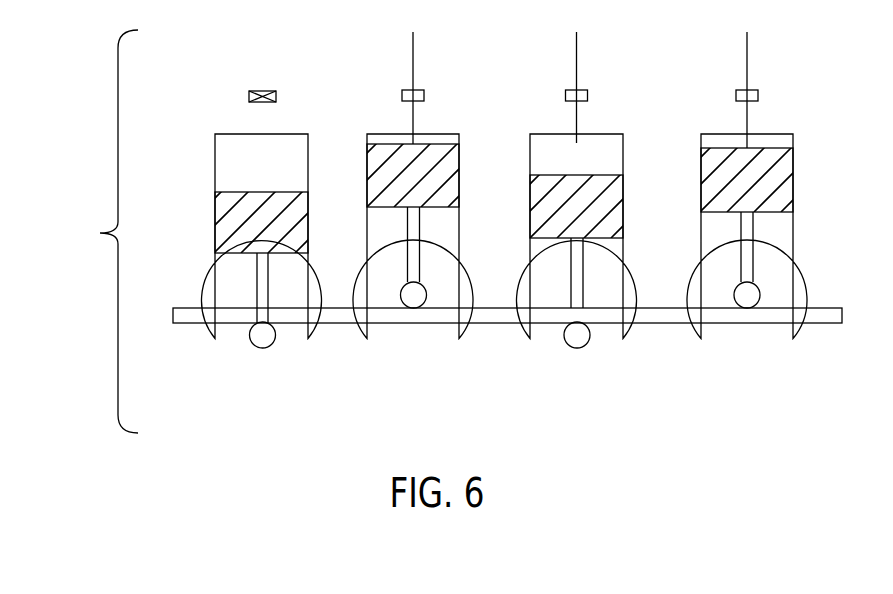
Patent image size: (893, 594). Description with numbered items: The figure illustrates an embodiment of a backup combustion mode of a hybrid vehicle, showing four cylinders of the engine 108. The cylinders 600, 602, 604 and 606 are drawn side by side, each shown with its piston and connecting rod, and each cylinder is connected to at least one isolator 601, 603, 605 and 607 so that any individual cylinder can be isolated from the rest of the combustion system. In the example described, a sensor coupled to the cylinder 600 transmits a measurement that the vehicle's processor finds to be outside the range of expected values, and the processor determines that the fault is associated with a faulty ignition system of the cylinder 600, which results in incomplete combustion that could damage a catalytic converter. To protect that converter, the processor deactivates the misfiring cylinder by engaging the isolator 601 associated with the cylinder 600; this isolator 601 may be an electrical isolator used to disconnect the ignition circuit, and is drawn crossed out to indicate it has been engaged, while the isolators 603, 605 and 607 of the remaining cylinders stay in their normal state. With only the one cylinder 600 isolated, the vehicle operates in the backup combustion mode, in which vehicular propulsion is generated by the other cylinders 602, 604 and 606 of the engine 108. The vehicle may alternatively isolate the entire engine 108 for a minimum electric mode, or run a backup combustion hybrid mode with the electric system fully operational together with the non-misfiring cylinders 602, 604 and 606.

The engine 108 is at (85, 231).
The cylinder 600 is at (223, 214).
The isolator 601 is at (248, 97).
The cylinder 602 is at (373, 163).
The isolator 603 is at (401, 95).
The cylinder 604 is at (535, 195).
The isolator 605 is at (565, 95).
The cylinder 606 is at (710, 163).
The isolator 607 is at (736, 95).